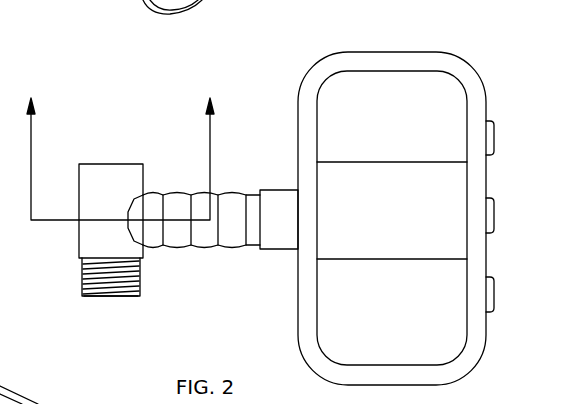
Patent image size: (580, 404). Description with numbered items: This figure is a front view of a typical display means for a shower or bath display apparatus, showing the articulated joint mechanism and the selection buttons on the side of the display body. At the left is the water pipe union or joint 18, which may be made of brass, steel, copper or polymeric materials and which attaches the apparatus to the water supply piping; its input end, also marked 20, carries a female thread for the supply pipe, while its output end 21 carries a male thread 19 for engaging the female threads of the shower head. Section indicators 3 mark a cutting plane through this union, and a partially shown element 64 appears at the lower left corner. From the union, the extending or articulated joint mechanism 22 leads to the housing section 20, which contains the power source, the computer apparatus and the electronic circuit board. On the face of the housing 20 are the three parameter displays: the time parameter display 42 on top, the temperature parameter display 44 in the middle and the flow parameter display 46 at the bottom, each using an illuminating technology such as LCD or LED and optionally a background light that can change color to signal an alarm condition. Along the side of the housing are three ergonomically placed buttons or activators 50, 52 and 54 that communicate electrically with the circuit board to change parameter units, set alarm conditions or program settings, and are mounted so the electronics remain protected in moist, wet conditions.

The section line 3- 3 is at (121, 145).
The water pipe union or joint 18 is at (80, 164).
The male thread 19 is at (82, 277).
The housing section 20 is at (118, 164).
The output end 21 is at (112, 297).
The articulated joint mechanism 22 is at (205, 244).
The time parameter display 42 is at (438, 93).
The temperature parameter display 44 is at (456, 180).
The flow parameter display 46 is at (447, 330).
The button or activator 50 is at (492, 133).
The button or activator 52 is at (490, 213).
The button or activator 54 is at (490, 295).
The hose 64 is at (2, 387).